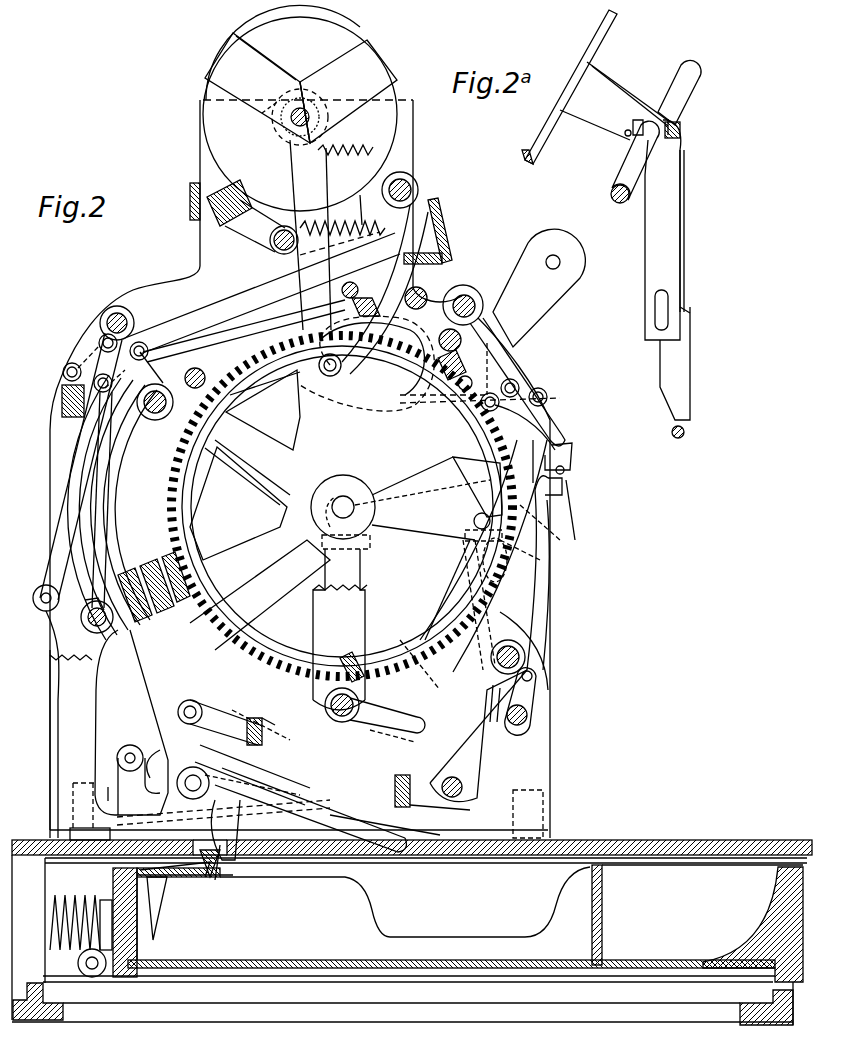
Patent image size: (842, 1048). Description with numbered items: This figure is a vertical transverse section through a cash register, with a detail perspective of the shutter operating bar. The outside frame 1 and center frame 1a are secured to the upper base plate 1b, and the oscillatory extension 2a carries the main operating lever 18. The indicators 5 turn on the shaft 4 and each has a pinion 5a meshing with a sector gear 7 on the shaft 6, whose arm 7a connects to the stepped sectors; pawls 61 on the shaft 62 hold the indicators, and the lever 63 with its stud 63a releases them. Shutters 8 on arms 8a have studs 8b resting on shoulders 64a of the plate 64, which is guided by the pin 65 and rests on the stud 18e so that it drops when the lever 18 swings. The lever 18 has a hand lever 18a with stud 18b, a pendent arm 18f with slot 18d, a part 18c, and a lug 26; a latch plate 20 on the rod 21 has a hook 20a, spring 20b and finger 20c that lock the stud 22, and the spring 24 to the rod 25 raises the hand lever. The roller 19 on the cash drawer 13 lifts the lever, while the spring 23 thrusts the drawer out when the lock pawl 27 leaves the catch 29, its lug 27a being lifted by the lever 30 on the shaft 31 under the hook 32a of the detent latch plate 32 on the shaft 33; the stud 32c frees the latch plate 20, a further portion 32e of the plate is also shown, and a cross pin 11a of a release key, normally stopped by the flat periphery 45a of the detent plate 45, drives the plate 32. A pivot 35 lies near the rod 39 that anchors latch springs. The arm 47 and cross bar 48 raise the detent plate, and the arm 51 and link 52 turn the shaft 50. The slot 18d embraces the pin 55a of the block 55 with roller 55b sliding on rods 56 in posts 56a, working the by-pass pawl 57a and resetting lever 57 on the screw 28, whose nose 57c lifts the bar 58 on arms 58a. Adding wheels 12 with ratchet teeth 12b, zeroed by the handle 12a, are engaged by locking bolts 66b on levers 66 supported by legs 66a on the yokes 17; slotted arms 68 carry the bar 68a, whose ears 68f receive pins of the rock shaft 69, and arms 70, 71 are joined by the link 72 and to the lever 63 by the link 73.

In FIG. 2, the outside frame 1 is at (50, 478).
In FIG. 2, the center frame 1a is at (50, 690).
In FIG. 2, the upper base plate 1b is at (660, 840).
In FIG. 2, the oscillatory extension of the main shaft 2a is at (342, 500).
In FIG. 2, the shaft 4 is at (300, 108).
In FIG. 2A, the shaft 4 is at (688, 94).
In FIG. 2, the indicator 5 is at (325, 30).
In FIG. 2, the pinion 5a is at (345, 139).
In FIG. 2, the shaft 6 is at (277, 250).
In FIG. 2, the sector gear 7 is at (360, 210).
In FIG. 2, the rearwardly extending arm 7a is at (233, 208).
In FIG. 2, the shutter 8 is at (215, 57).
In FIG. 2A, the shutter 8 is at (590, 50).
In FIG. 2, the shutter arm 8a is at (300, 65).
In FIG. 2A, the shutter arm 8a is at (628, 94).
In FIG. 2, the stud 8b is at (355, 116).
In FIG. 2A, the stud 8b is at (625, 133).
In FIG. 2, the cross pin 11a is at (565, 468).
In FIG. 2, the adding wheel 12 is at (185, 515).
In FIG. 2, the handle 12a is at (553, 422).
In FIG. 2, the peripheral ratchet teeth 12b is at (240, 402).
In FIG. 2, the cash drawer 13 is at (458, 923).
In FIG. 2, the operating yoke 17 is at (150, 575).
In FIG. 2, the main operating lever 18 is at (422, 498).
In FIG. 2, the hand lever 18a is at (539, 288).
In FIG. 2, the stud 18b is at (467, 377).
In FIG. 2, the lever bracket 18c is at (320, 418).
In FIG. 2, the slot 18d is at (205, 752).
In FIG. 2A, the stud 18e is at (684, 432).
In FIG. 2, the pendent arm 18f is at (137, 722).
In FIG. 2, the roller 19 is at (177, 908).
In FIG. 2, the latch plate 20 is at (462, 532).
In FIG. 2, the hook 20a is at (474, 518).
In FIG. 2, the spring 20b is at (496, 594).
In FIG. 2, the finger 20c is at (525, 518).
In FIG. 2, the rod 21 is at (520, 658).
In FIG. 2, the stud 22 is at (477, 487).
In FIG. 2, the spring 23 is at (50, 910).
In FIG. 2, the spring 24 is at (480, 405).
In FIG. 2, the rod 25 is at (361, 293).
In FIG. 2, the lug 26 is at (520, 545).
In FIG. 2, the lock pawl 27 is at (228, 830).
In FIG. 2, the lug 27a is at (261, 720).
In FIG. 2, the screw 28 is at (310, 805).
In FIG. 2, the catch 29 is at (223, 874).
In FIG. 2, the lever 30 is at (357, 715).
In FIG. 2, the shaft 31 is at (330, 700).
In FIG. 2, the detent latch plate 32 is at (489, 639).
In FIG. 2, the hook 32a is at (429, 665).
In FIG. 2, the stud 32c is at (500, 555).
In FIG. 2, the lever portion 32e is at (572, 482).
In FIG. 2, the shaft 33 is at (464, 786).
In FIG. 2, the pivot 35 is at (447, 336).
In FIG. 2, the rod 39 is at (468, 302).
In FIG. 2, the detent plate 45 is at (452, 622).
In FIG. 2, the flat periphery 45a is at (565, 478).
In FIG. 2, the arm 47 is at (376, 741).
In FIG. 2, the cross bar 48 is at (340, 629).
In FIG. 2, the shaft 50 is at (530, 716).
In FIG. 2, the arm 51 is at (538, 698).
In FIG. 2, the link 52 is at (499, 714).
In FIG. 2, the block 55 is at (223, 808).
In FIG. 2, the pin 55a is at (210, 778).
In FIG. 2, the roller 55b is at (130, 750).
In FIG. 2, the rod 56 is at (105, 781).
In FIG. 2, the post 56a is at (82, 785).
In FIG. 2, the resetting lever 57 is at (226, 718).
In FIG. 2, the by-pass pawl 57a is at (261, 707).
In FIG. 2, the nose 57c is at (388, 827).
In FIG. 2, the bar 58 is at (386, 791).
In FIG. 2, the arm 58a is at (450, 821).
In FIG. 2, the pawl 61 is at (160, 400).
In FIG. 2, the shaft 62 is at (412, 190).
In FIG. 2, the lever 63 is at (397, 286).
In FIG. 2, the stud 63a is at (330, 360).
In FIG. 2, the plate 64 is at (310, 235).
In FIG. 2A, the plate 64 is at (640, 166).
In FIG. 2A, the shoulder 64a is at (627, 148).
In FIG. 2, the pin 65 is at (300, 315).
In FIG. 2, the operating lever 66 is at (247, 472).
In FIG. 2, the depending leg 66a is at (134, 505).
In FIG. 2, the reciprocating locking bolt 66b is at (119, 507).
In FIG. 2, the slotted arm 68 is at (170, 402).
In FIG. 2, the bar 68a is at (100, 565).
In FIG. 2, the ear 68f is at (82, 594).
In FIG. 2, the rock shaft 69 is at (95, 630).
In FIG. 2, the arm 70 is at (128, 386).
In FIG. 2, the arm 71 is at (70, 614).
In FIG. 2, the link 72 is at (60, 520).
In FIG. 2, the link 73 is at (232, 316).